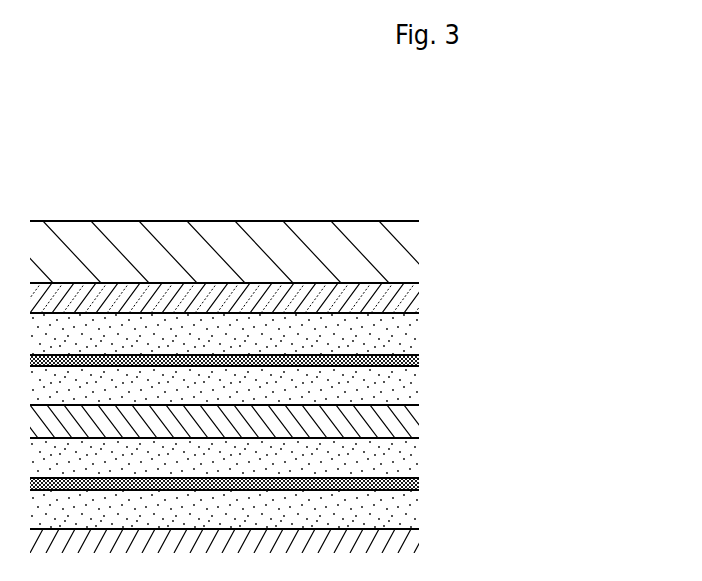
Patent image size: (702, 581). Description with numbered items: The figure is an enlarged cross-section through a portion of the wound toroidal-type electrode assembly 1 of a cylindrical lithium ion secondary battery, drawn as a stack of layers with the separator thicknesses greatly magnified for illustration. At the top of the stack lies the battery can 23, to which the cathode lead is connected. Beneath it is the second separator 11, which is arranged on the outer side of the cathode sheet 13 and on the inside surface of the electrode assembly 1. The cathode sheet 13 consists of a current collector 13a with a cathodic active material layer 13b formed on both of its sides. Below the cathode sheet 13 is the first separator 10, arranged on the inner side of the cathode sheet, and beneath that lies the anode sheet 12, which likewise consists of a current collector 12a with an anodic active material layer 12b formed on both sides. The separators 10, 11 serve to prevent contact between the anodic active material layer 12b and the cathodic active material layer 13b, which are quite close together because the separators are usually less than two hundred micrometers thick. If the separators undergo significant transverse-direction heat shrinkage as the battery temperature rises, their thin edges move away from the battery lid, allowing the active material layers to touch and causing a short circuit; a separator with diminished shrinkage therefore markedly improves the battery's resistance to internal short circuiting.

The toroidal-type electrode assembly 1 is at (313, 418).
The battery can 23 is at (262, 228).
The second separator 11 is at (419, 297).
The cathode sheet 13 is at (298, 359).
The current collector 13a is at (419, 357).
The cathodic active material layer 13b is at (419, 323).
The first separator 10 is at (419, 432).
The anode sheet 12 is at (299, 484).
The current collector 12a is at (419, 482).
The anodic active material layer 12b is at (419, 453).